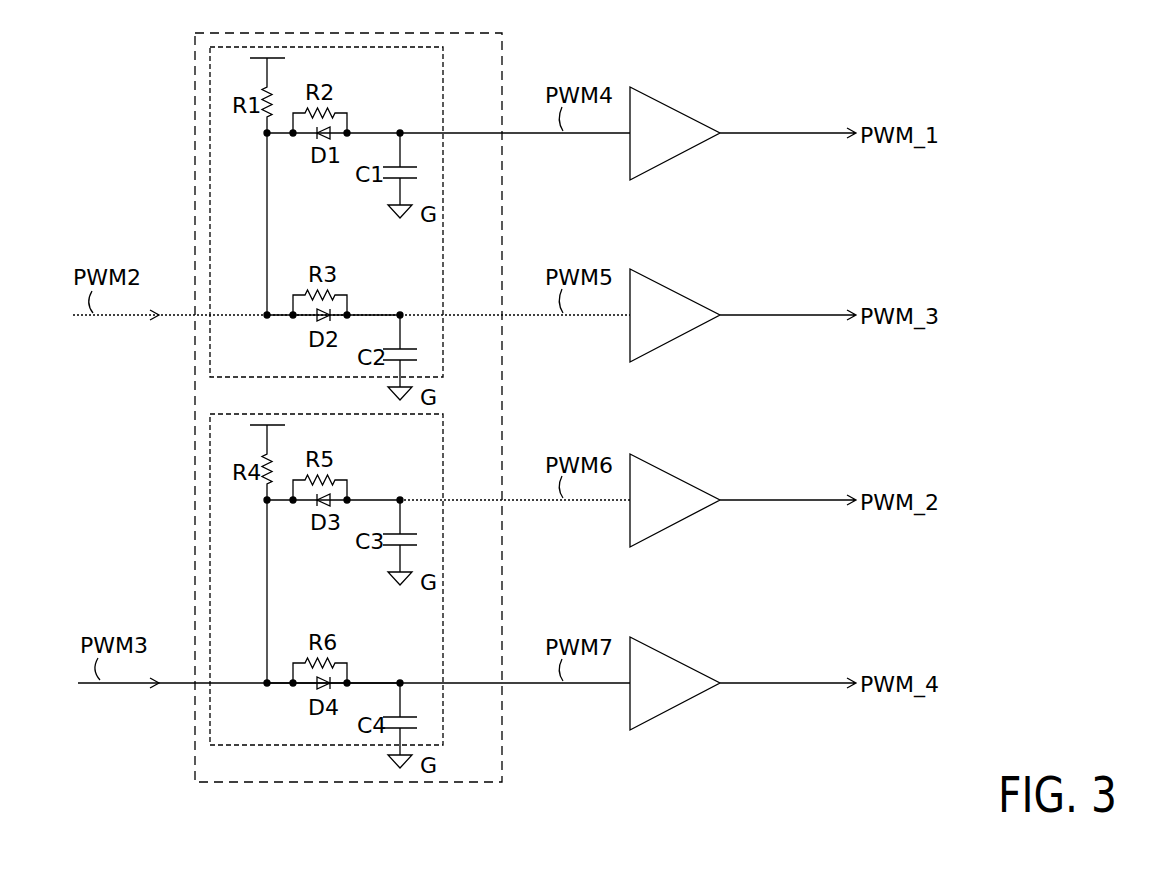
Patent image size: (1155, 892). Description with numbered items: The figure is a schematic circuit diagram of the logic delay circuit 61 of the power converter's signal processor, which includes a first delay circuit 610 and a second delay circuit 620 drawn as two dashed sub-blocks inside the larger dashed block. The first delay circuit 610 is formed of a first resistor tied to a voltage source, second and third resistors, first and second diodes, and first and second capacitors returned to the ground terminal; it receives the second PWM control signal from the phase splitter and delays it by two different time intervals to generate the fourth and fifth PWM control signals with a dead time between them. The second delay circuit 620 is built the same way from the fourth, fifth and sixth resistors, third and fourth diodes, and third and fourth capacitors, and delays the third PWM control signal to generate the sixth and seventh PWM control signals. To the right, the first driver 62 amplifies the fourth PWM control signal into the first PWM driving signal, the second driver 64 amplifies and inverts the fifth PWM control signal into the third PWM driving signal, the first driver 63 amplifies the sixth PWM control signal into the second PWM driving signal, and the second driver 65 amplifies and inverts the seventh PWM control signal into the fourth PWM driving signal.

The logic delay circuit 61 is at (195, 68).
The first delay circuit 610 is at (443, 93).
The second delay circuit 620 is at (443, 460).
The first driver 62 is at (675, 109).
The first driver 63 is at (675, 476).
The second driver 64 is at (675, 290).
The second driver 65 is at (675, 658).